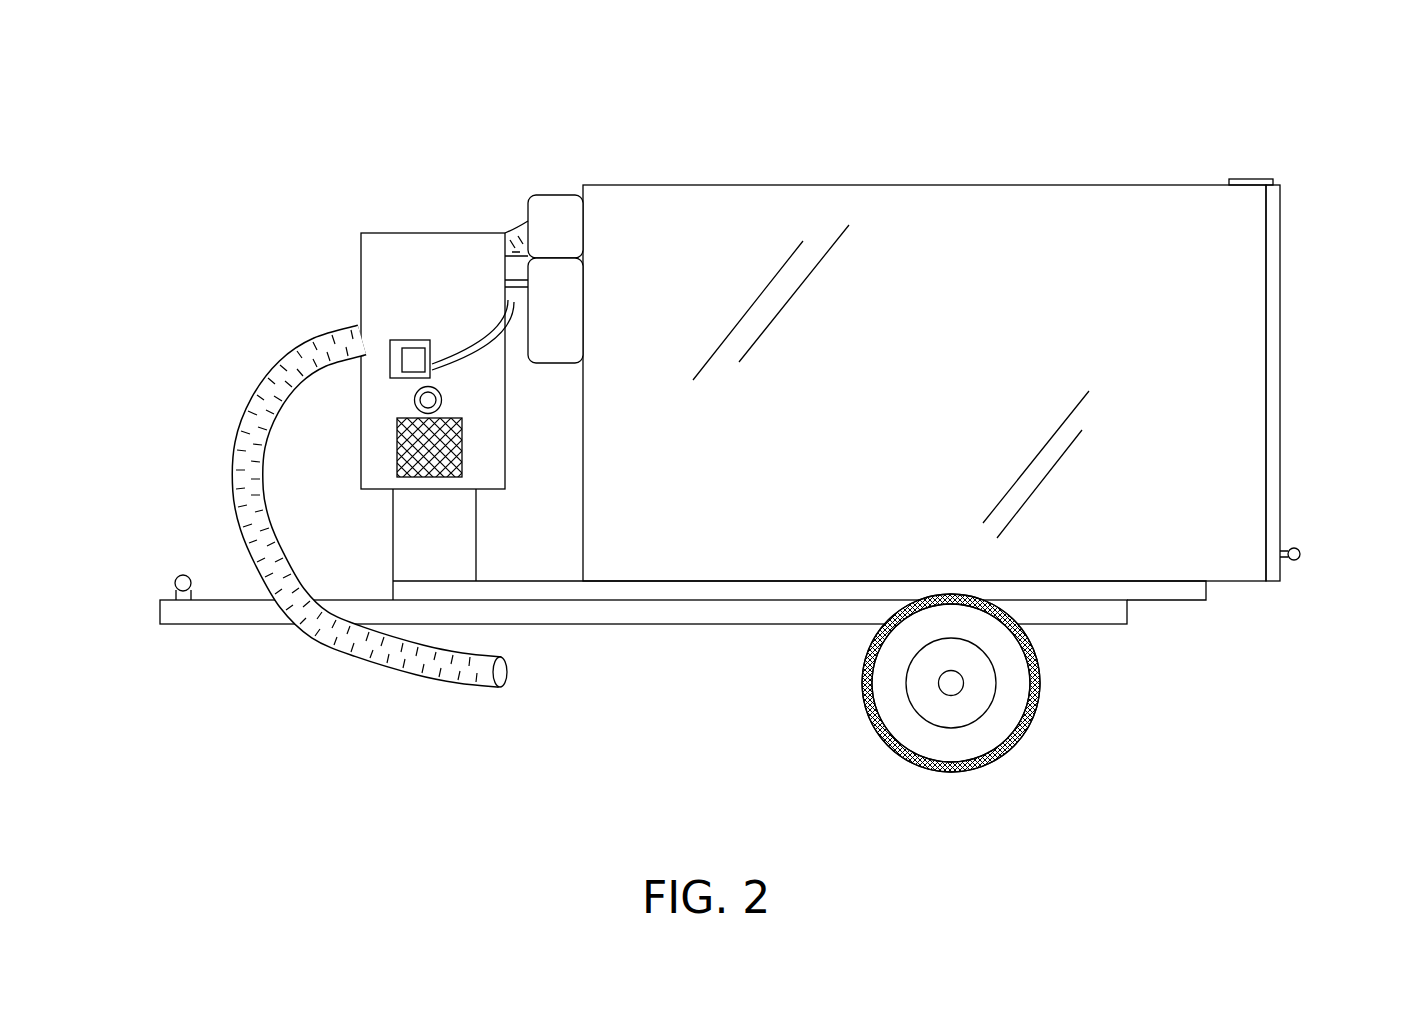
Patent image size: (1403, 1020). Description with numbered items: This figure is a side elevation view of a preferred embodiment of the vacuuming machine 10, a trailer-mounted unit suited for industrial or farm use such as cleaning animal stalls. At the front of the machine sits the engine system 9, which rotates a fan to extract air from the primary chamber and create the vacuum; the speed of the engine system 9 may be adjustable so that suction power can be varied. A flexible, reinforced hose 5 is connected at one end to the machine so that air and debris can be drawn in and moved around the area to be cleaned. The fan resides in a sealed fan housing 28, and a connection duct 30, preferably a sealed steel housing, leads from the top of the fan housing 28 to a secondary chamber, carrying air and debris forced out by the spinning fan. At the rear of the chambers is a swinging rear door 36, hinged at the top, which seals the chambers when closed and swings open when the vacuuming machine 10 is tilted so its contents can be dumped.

The vacuuming machine 10 is at (385, 117).
The hose 5 is at (275, 378).
The engine system 9 is at (385, 277).
The fan housing 28 is at (568, 317).
The connection duct 30 is at (553, 208).
The rear door 36 is at (1280, 328).